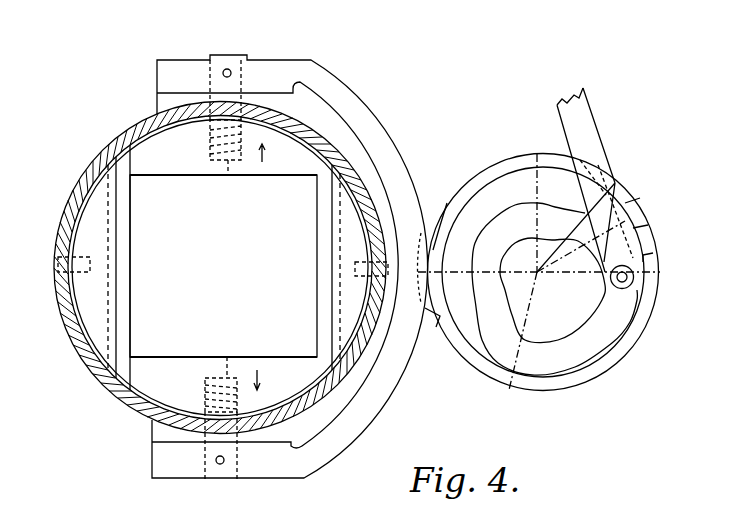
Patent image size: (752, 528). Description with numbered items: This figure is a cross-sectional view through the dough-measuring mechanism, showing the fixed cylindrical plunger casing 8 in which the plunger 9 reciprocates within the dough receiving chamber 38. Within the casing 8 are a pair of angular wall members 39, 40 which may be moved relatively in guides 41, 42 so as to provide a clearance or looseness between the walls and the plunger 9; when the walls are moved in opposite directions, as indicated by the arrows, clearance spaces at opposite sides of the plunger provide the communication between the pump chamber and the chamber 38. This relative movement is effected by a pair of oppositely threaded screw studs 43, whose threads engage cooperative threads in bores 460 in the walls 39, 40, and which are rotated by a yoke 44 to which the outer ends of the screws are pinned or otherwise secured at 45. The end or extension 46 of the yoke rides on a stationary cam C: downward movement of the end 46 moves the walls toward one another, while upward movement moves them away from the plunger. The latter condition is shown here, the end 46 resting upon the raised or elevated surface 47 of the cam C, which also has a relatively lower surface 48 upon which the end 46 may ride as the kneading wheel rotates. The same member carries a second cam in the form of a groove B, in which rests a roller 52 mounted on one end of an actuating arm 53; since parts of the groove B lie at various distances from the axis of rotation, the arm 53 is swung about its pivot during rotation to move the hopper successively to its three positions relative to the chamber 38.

The plunger casing 8 is at (144, 134).
The plunger 9 is at (150, 223).
The dough receiving chamber 38 is at (143, 193).
The angular wall member 39 is at (150, 357).
The angular wall member 40 is at (302, 168).
The guide 41 is at (108, 300).
The guide 42 is at (340, 305).
The screw stud 43 is at (208, 138).
The yoke 44 is at (375, 410).
The pin connection 45 is at (231, 71).
The end of the yoke 46 is at (428, 270).
The elevated surface of cam 47 is at (439, 213).
The lower surface of cam 48 is at (460, 355).
The roller 52 is at (634, 290).
The actuating arm 53 is at (601, 154).
The threaded bore 460 is at (228, 176).
The cam groove B is at (507, 222).
The cam C is at (479, 170).